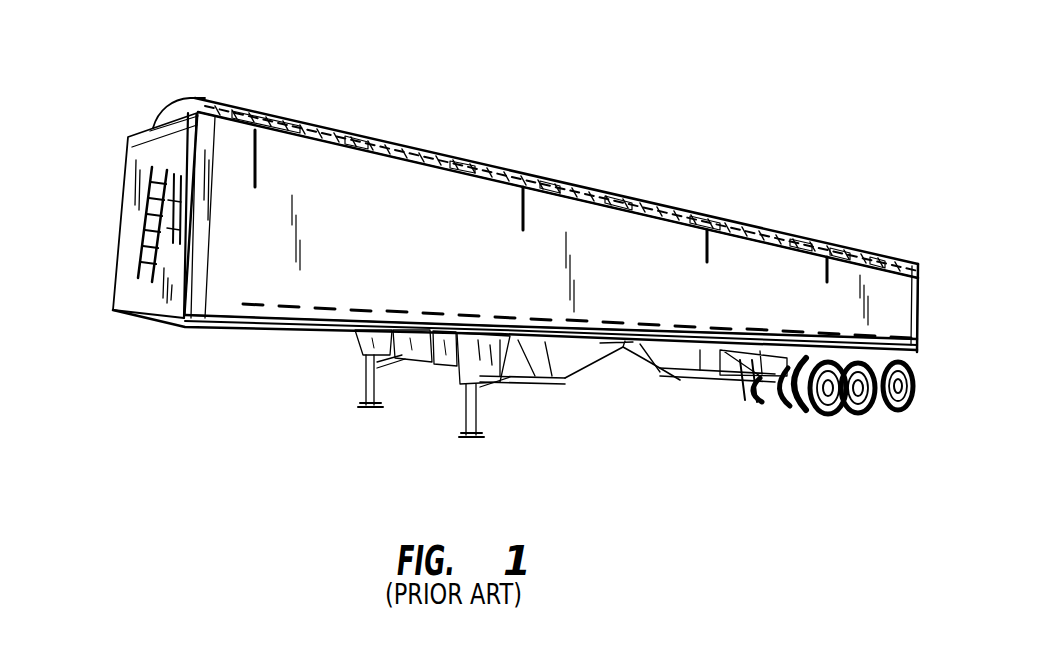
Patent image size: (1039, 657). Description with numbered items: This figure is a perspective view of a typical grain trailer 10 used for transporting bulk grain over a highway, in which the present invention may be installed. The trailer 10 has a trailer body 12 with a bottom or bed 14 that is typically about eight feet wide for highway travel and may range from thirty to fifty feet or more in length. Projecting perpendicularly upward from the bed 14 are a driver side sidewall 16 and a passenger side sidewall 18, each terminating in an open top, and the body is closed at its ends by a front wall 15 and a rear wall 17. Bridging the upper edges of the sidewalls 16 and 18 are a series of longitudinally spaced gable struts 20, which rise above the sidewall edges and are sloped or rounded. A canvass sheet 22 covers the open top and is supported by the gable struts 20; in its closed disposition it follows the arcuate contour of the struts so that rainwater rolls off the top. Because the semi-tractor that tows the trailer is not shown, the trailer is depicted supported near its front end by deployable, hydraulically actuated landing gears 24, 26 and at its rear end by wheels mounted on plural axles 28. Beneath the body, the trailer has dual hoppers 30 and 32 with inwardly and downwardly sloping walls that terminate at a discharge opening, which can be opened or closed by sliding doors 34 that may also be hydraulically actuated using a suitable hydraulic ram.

The trailer 10 is at (743, 171).
The trailer body 12 is at (392, 254).
The bottom or bed 14 is at (258, 330).
The front wall 15 is at (127, 279).
The driver side sidewall 16 is at (551, 224).
The rear wall 17 is at (920, 310).
The passenger side sidewall 18 is at (133, 206).
The gable struts 20 is at (196, 97).
The canvass sheet 22 is at (437, 162).
The landing gear 24 is at (460, 418).
The landing gear 26 is at (363, 395).
The wheels mounted on plural axles 28 is at (876, 420).
The hopper 30 is at (553, 386).
The hopper 32 is at (714, 386).
The sliding doors 34 is at (517, 386).